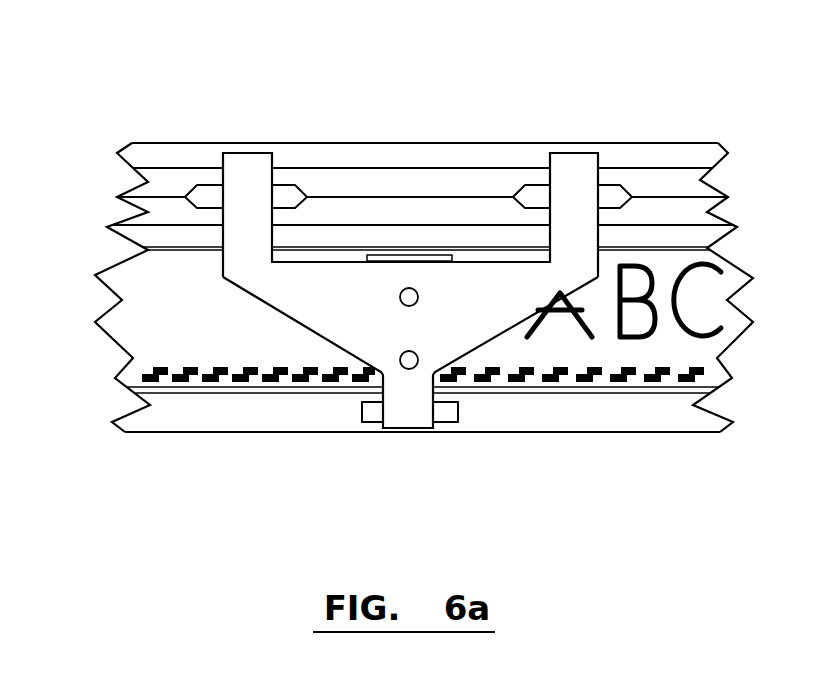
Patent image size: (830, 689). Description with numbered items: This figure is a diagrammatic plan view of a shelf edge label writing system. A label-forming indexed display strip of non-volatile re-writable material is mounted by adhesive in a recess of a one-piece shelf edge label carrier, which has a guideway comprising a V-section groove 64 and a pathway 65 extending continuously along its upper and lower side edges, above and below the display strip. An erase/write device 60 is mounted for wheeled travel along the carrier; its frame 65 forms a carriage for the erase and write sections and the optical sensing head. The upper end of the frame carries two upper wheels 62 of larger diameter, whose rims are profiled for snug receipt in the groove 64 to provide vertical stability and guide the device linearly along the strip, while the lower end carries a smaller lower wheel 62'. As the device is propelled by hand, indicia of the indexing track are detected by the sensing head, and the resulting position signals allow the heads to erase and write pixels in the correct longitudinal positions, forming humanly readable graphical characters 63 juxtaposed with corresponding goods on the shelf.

The V-section groove 64 is at (180, 176).
The upper wheels 62 is at (422, 108).
The pathway 65 is at (459, 328).
The erase/write device 60 is at (348, 318).
The lower wheel 62' is at (434, 476).
The graphical characters 63 is at (618, 333).